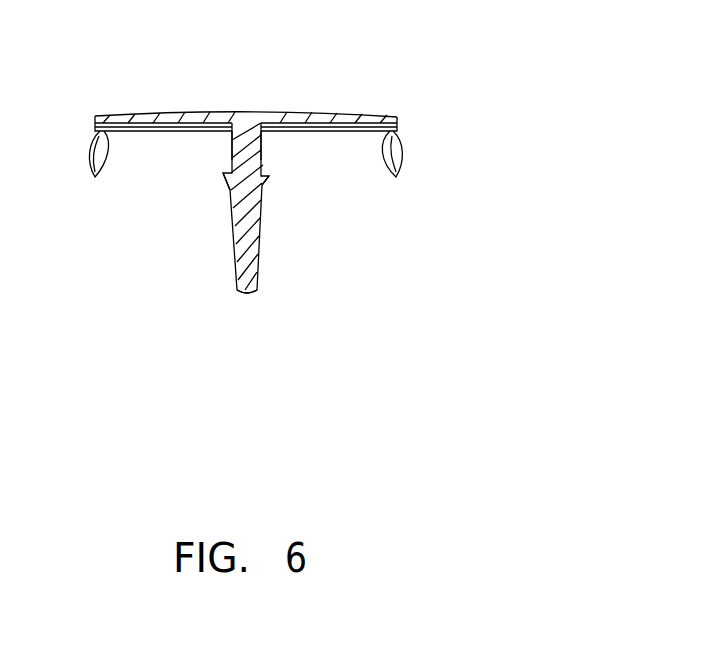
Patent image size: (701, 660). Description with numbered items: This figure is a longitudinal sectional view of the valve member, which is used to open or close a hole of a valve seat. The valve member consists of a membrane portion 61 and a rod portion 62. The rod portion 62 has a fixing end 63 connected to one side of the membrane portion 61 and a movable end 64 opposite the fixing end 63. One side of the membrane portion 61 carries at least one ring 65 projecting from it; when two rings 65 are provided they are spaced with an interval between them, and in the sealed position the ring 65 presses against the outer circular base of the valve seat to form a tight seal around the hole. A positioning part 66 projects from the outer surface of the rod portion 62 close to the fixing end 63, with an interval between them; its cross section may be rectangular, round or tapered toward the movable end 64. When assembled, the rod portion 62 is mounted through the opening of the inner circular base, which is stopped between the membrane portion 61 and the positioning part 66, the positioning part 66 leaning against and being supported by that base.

The membrane portion 61 is at (342, 114).
The rod portion 62 is at (250, 231).
The fixing end 63 is at (229, 136).
The movable end 64 is at (245, 282).
The ring 65 is at (248, 169).
The positioning part 66 is at (263, 182).